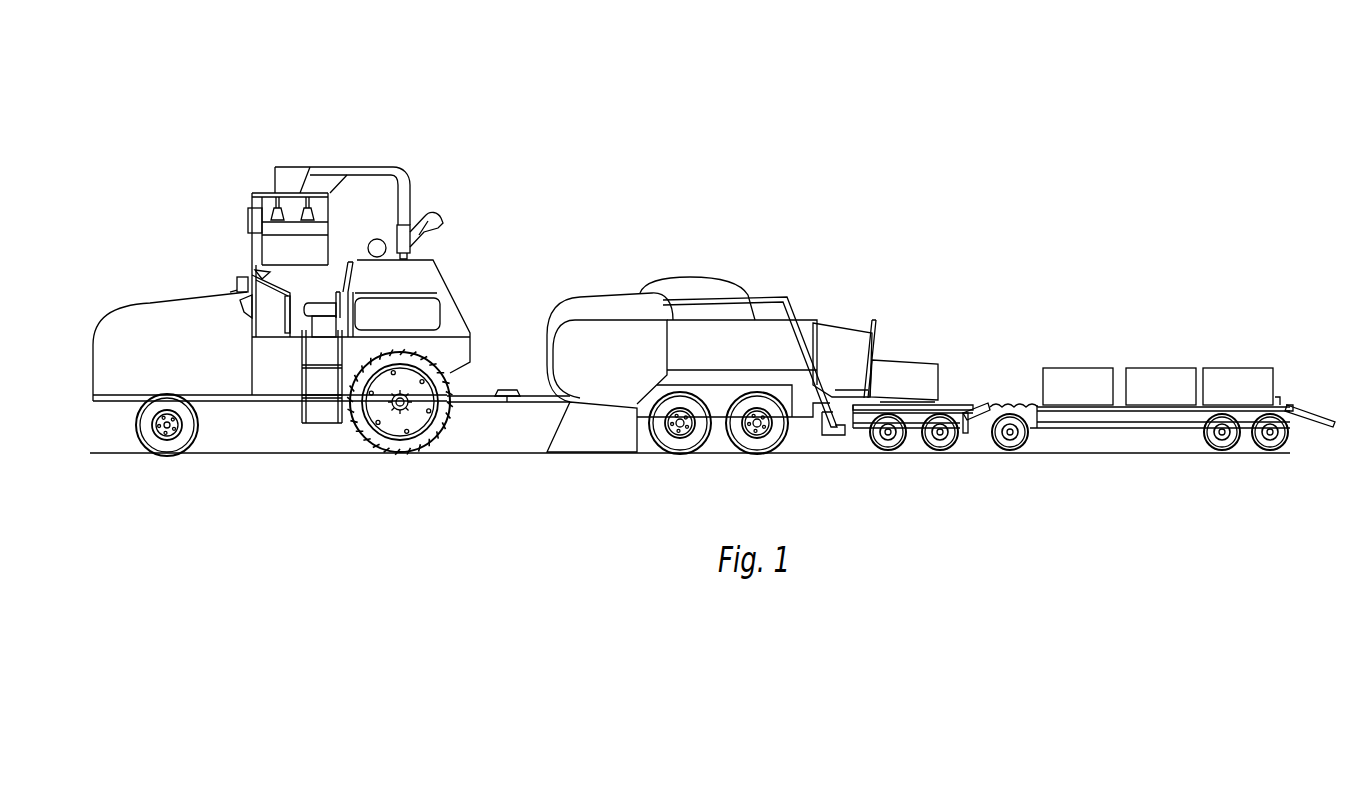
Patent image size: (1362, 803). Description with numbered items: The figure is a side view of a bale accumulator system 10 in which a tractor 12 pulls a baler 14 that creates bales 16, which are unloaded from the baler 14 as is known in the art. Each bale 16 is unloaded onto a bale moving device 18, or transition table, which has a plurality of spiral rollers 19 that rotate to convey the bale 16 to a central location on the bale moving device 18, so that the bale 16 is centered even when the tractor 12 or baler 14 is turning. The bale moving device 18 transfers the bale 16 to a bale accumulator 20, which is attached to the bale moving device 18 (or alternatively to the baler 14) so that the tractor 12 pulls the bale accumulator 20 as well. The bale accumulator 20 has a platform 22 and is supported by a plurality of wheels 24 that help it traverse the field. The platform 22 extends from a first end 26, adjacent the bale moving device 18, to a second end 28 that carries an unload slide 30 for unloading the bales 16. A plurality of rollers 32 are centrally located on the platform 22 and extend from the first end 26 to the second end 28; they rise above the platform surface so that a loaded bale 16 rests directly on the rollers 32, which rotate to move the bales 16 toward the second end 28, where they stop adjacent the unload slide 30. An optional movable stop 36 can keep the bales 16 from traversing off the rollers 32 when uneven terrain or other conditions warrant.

The bale accumulator system 10 is at (275, 115).
The tractor 12 is at (380, 167).
The baler 14 is at (598, 293).
The bale 16 is at (927, 363).
The bale moving device 18 is at (915, 443).
The spiral rollers 19 is at (945, 402).
The bale accumulator 20 is at (1222, 302).
The platform 22 is at (1063, 405).
The wheels 24 is at (1205, 445).
The first end 26 is at (972, 427).
The second end 28 is at (1293, 405).
The unload slide 30 is at (1320, 416).
The rollers 32 is at (1037, 405).
The stop 36 is at (1278, 397).